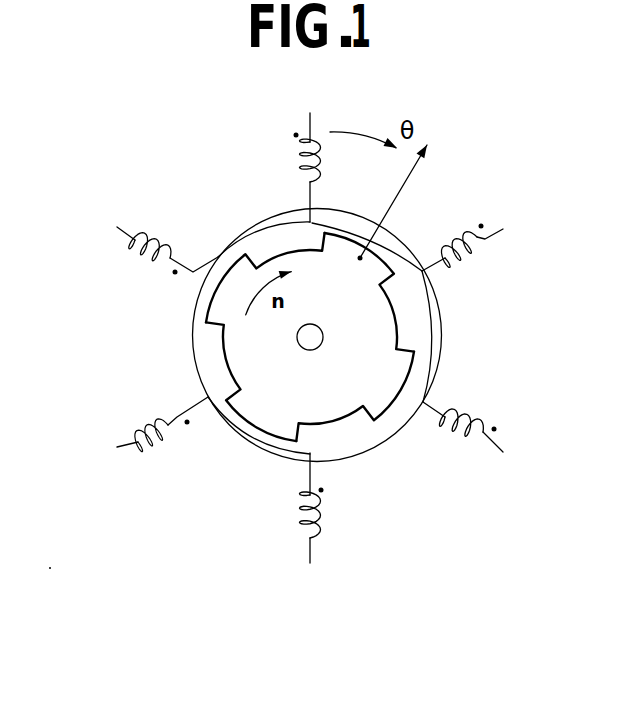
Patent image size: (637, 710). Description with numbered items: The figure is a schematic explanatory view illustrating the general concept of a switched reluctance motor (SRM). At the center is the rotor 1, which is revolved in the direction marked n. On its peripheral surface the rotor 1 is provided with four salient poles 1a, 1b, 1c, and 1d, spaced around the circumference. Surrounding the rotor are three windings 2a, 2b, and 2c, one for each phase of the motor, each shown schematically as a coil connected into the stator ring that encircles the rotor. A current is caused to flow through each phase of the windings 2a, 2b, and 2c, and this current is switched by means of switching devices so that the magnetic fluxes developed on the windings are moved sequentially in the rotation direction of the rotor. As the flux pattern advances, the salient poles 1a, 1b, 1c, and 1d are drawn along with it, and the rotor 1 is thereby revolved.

The rotor 1 is at (380, 338).
The salient pole 1a is at (392, 258).
The salient pole 1b is at (382, 405).
The salient pole 1c is at (262, 431).
The salient pole 1d is at (227, 283).
The winding 2a is at (298, 161).
The winding 2b is at (482, 260).
The winding 2c is at (468, 440).